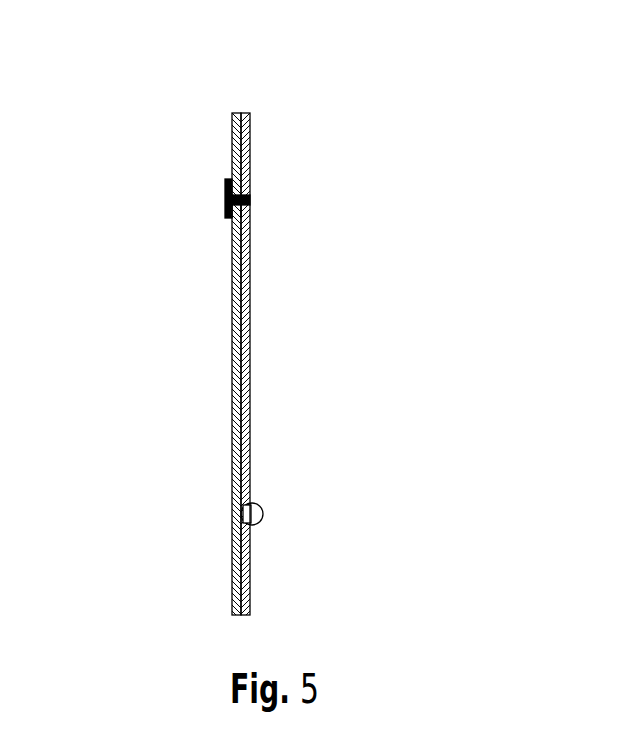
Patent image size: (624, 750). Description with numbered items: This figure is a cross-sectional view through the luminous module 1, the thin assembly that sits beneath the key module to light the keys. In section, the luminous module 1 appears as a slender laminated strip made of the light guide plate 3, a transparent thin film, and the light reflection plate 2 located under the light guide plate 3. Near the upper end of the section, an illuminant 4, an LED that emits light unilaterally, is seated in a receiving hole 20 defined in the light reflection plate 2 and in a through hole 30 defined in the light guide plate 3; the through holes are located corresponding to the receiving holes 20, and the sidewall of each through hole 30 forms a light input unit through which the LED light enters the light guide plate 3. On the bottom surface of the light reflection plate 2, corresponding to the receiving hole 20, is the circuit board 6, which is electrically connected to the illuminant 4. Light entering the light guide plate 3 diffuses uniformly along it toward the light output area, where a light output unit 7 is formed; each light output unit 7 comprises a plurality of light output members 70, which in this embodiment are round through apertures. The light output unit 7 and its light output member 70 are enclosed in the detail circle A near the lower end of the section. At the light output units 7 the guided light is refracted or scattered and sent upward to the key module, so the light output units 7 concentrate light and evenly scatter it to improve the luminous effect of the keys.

The luminous module 1 is at (195, 132).
The light reflection plate 2 is at (232, 113).
The light guide plate 3 is at (248, 112).
The illuminant 4 is at (250, 196).
The circuit board 6 is at (225, 205).
The receiving hole 20 is at (233, 217).
The through hole 30 is at (250, 206).
The light output unit 7 is at (263, 512).
The light output member 70 is at (253, 503).
The detail region A is at (266, 523).